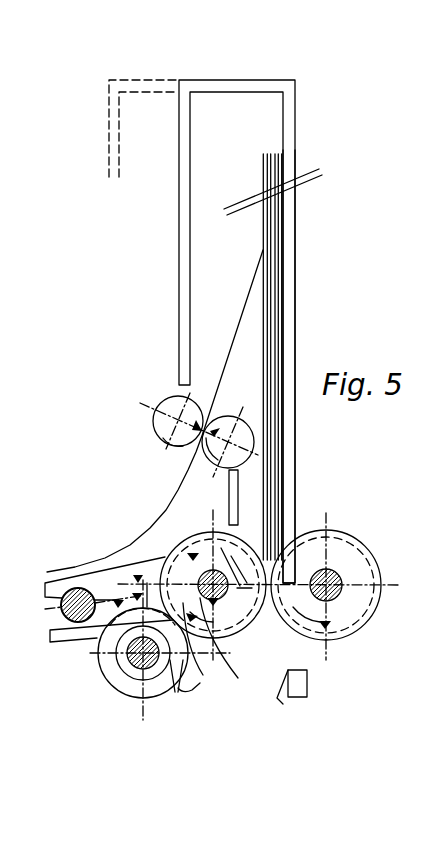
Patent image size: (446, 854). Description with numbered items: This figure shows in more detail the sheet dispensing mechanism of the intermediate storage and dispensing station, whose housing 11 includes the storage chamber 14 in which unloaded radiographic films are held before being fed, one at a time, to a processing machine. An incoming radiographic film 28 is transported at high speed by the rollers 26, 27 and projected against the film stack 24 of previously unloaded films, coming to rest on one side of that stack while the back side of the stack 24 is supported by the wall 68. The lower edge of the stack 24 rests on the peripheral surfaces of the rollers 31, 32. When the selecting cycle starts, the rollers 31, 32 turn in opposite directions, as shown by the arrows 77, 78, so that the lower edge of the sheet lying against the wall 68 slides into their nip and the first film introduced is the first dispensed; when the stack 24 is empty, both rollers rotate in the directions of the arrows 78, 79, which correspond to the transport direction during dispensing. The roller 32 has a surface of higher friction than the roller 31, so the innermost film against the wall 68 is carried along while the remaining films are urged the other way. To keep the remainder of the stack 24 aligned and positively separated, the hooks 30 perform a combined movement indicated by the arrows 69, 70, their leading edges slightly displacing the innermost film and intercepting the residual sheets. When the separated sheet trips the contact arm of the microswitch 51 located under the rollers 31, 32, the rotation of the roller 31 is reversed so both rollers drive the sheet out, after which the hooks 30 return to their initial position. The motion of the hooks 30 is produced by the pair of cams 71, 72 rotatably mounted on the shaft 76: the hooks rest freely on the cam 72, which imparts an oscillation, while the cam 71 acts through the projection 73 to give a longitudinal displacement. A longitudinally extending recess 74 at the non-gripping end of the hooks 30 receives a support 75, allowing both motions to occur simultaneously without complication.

The housing 11 is at (143, 89).
The storage chamber 14 is at (233, 103).
The film stack 24 is at (276, 237).
The transport roller 26 is at (158, 437).
The transport roller 27 is at (243, 418).
The radiographic film 28 is at (241, 322).
The hooks 30 is at (85, 631).
The roller 31 is at (240, 613).
The roller 32 is at (338, 553).
The microswitch 51 is at (308, 683).
The wall 68 is at (296, 323).
The arrow 69 is at (137, 577).
The arrow 70 is at (126, 598).
The cam 71 is at (118, 672).
The cam 72 is at (190, 662).
The projection 73 is at (190, 690).
The recess 74 is at (53, 600).
The support 75 is at (56, 642).
The shaft 76 is at (155, 668).
The arrow 77 is at (220, 647).
The arrow 78 is at (327, 630).
The arrow 79 is at (193, 553).